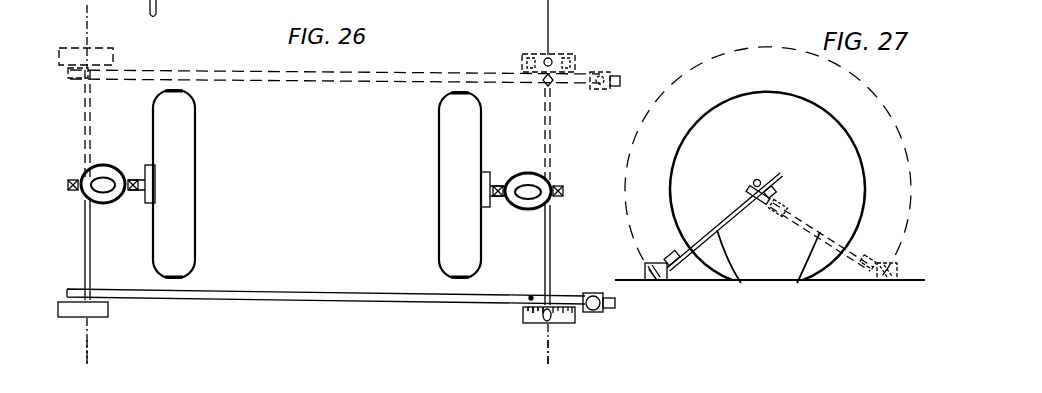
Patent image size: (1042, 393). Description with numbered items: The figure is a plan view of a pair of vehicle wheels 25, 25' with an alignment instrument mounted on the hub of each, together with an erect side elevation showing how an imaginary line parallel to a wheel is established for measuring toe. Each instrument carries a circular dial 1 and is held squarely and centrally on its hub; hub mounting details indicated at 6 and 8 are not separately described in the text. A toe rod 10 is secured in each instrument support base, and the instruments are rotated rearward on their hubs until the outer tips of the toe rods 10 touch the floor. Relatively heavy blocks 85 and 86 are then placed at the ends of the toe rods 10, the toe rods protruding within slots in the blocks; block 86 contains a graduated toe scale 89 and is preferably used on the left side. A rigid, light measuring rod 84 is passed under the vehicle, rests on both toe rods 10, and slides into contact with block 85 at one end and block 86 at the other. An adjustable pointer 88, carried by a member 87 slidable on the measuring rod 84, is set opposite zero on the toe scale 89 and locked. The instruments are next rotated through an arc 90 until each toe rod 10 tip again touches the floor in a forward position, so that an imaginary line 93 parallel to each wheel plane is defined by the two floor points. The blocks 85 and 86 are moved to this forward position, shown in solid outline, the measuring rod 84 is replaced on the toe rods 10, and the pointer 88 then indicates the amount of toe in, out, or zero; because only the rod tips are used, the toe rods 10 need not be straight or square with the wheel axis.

In FIG. 26, the circular dial 1 is at (113, 203).
In FIG. 26, the axle nut 6 is at (136, 175).
In FIG. 26, the wheel bracket 8 is at (150, 205).
In FIG. 26, the toe rod 10 is at (83, 139).
In FIG. 27, the toe rod 10 is at (793, 283).
In FIG. 26, the wheel 25 is at (439, 185).
In FIG. 26, the right hand wheel 25' is at (193, 184).
In FIG. 26, the measuring rod 84 is at (355, 86).
In FIG. 27, the measuring rod 84 is at (670, 253).
In FIG. 26, the block 85 is at (58, 57).
In FIG. 26, the block 86 is at (537, 55).
In FIG. 27, the block 86 is at (658, 280).
In FIG. 26, the pointer slide 87 is at (605, 318).
In FIG. 26, the adjustable pointer 88 is at (533, 291).
In FIG. 26, the graduated toe scale 89 is at (563, 313).
In FIG. 27, the arc 90 is at (697, 65).
In FIG. 26, the imaginary line 93 is at (93, 335).
In FIG. 27, the imaginary line 93 is at (772, 283).